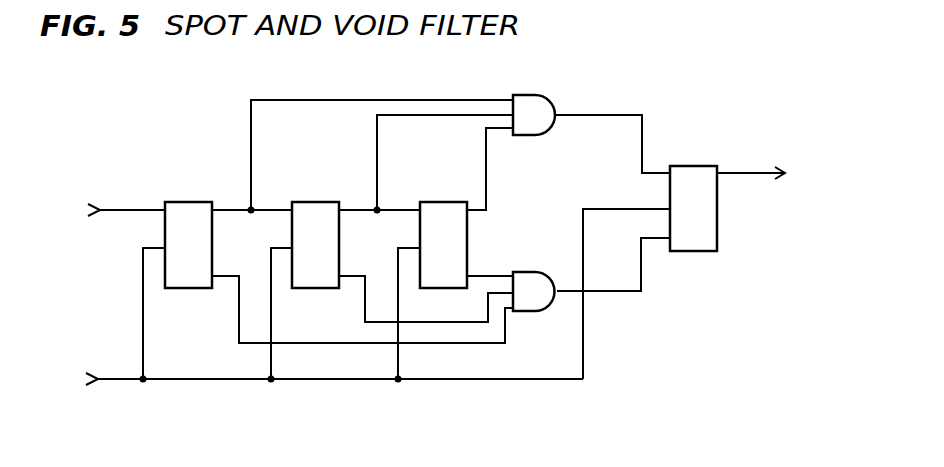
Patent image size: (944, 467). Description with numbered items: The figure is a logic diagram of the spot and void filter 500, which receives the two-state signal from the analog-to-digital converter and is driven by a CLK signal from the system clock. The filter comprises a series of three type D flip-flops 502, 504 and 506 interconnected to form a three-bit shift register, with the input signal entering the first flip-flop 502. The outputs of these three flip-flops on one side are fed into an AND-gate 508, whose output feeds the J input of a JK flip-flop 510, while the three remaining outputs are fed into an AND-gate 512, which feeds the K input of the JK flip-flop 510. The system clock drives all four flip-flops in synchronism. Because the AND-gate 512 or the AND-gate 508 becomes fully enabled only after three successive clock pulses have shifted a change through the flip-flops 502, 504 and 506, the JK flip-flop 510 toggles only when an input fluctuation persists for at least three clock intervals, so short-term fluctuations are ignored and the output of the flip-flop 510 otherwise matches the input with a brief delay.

The spot and void filter 500 is at (434, 200).
The type D flip-flop 502 is at (213, 176).
The type D flip-flop 504 is at (339, 176).
The type D flip-flop 506 is at (458, 176).
The AND-gate 508 is at (534, 115).
The JK flip-flop 510 is at (694, 166).
The AND-gate 512 is at (534, 291).